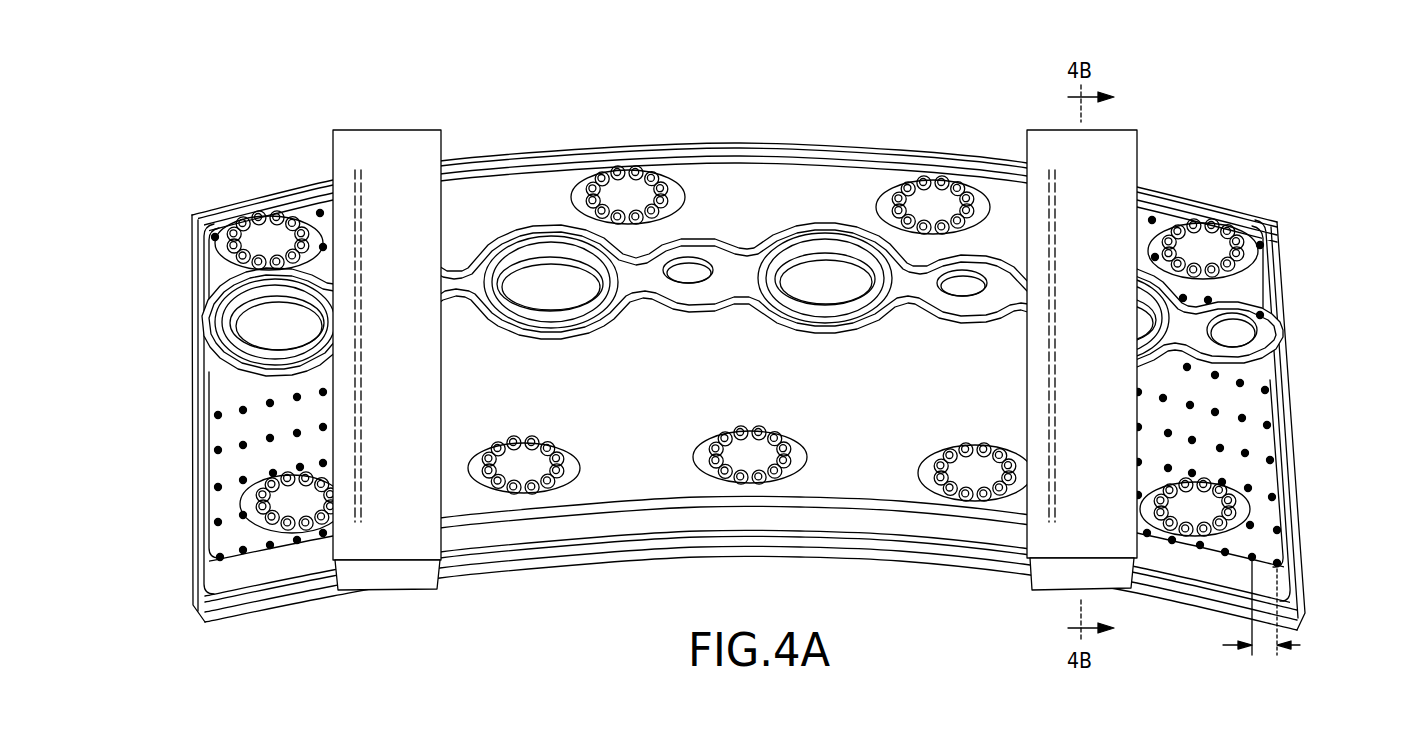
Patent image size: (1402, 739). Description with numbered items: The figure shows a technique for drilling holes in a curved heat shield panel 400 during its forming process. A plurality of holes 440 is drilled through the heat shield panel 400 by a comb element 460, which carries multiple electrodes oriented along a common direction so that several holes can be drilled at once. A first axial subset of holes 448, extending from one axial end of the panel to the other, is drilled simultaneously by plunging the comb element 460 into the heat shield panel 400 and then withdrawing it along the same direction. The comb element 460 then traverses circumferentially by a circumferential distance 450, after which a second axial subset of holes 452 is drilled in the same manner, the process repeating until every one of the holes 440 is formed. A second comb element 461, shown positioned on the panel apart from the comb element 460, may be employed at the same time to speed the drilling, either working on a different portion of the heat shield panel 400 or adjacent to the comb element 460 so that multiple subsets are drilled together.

The heat shield panel 400 is at (192, 348).
The plurality of holes 440 is at (1279, 531).
The first axial subset of holes 448 is at (1262, 246).
The circumferential distance 450 is at (1300, 645).
The second axial subset of holes 452 is at (1217, 213).
The comb element 460 is at (1142, 587).
The second comb element 461 is at (408, 143).